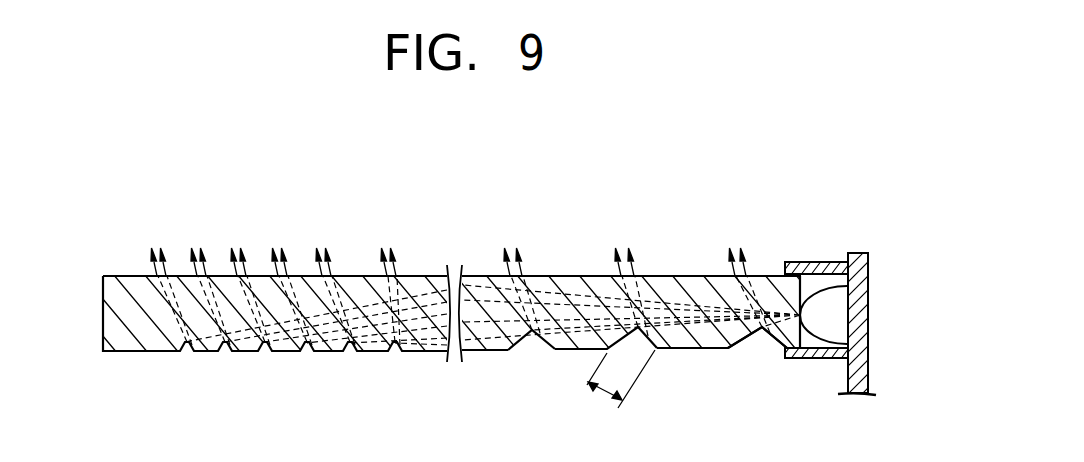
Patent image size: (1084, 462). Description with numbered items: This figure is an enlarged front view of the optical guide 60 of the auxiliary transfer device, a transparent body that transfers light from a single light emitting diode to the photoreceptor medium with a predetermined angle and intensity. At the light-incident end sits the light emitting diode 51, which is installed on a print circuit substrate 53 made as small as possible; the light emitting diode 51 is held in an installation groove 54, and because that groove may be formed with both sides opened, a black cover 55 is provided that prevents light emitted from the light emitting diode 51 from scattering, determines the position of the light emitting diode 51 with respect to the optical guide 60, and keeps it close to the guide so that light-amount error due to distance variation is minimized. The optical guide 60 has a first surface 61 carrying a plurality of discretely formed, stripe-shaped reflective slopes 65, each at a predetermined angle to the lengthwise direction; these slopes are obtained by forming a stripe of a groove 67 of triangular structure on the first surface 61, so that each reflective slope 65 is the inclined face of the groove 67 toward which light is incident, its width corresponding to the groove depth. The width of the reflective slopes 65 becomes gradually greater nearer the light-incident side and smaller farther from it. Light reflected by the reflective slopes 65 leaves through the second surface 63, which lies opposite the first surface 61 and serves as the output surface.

The optical guide 60 is at (141, 227).
The first surface 61 is at (480, 352).
The second surface 63 is at (580, 273).
The reflective slope 65 is at (677, 347).
The groove 67 is at (750, 345).
The light emitting diode (LED) 51 is at (820, 320).
The print circuit substrate 53 is at (862, 260).
The installation groove 54 is at (808, 268).
The cover 55 is at (817, 280).